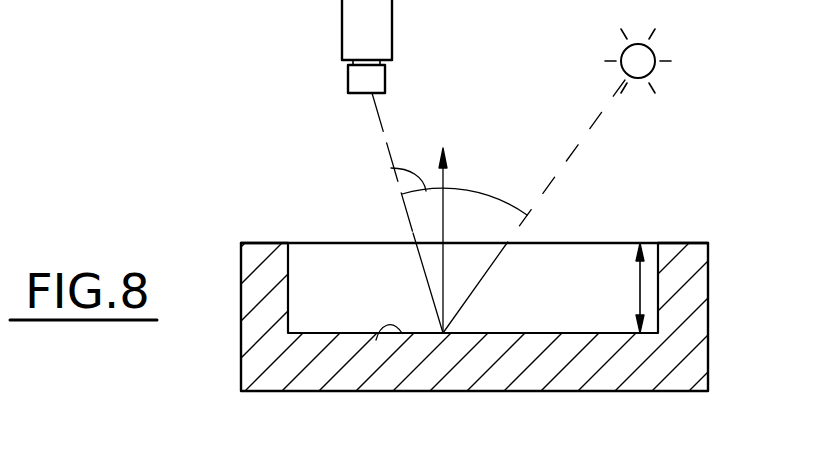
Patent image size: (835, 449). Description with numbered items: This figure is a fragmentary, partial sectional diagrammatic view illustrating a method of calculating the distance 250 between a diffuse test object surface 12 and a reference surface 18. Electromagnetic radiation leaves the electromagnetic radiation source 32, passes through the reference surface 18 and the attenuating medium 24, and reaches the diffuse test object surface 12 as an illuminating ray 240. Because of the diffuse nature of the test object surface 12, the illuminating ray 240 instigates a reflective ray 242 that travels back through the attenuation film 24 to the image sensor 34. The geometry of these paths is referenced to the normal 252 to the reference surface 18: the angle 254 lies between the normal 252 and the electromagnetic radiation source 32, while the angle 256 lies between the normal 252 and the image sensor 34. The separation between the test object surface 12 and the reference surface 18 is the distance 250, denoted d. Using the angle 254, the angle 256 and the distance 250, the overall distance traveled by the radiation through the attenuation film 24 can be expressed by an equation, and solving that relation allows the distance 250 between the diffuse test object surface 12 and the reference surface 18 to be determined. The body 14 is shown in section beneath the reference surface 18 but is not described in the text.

The diffuse test object surface 12 is at (376, 340).
The substrate body 14 is at (632, 383).
The reference surface 18 is at (326, 242).
The attenuating medium 24 is at (562, 252).
The electromagnetic radiation source 32 is at (653, 50).
The image sensor 34 is at (390, 35).
The illuminating ray 240 is at (600, 121).
The reflective ray 242 is at (378, 118).
The distance 250 is at (640, 266).
The normal 252 is at (447, 178).
The angle 254 is at (487, 193).
The angle 256 is at (393, 168).